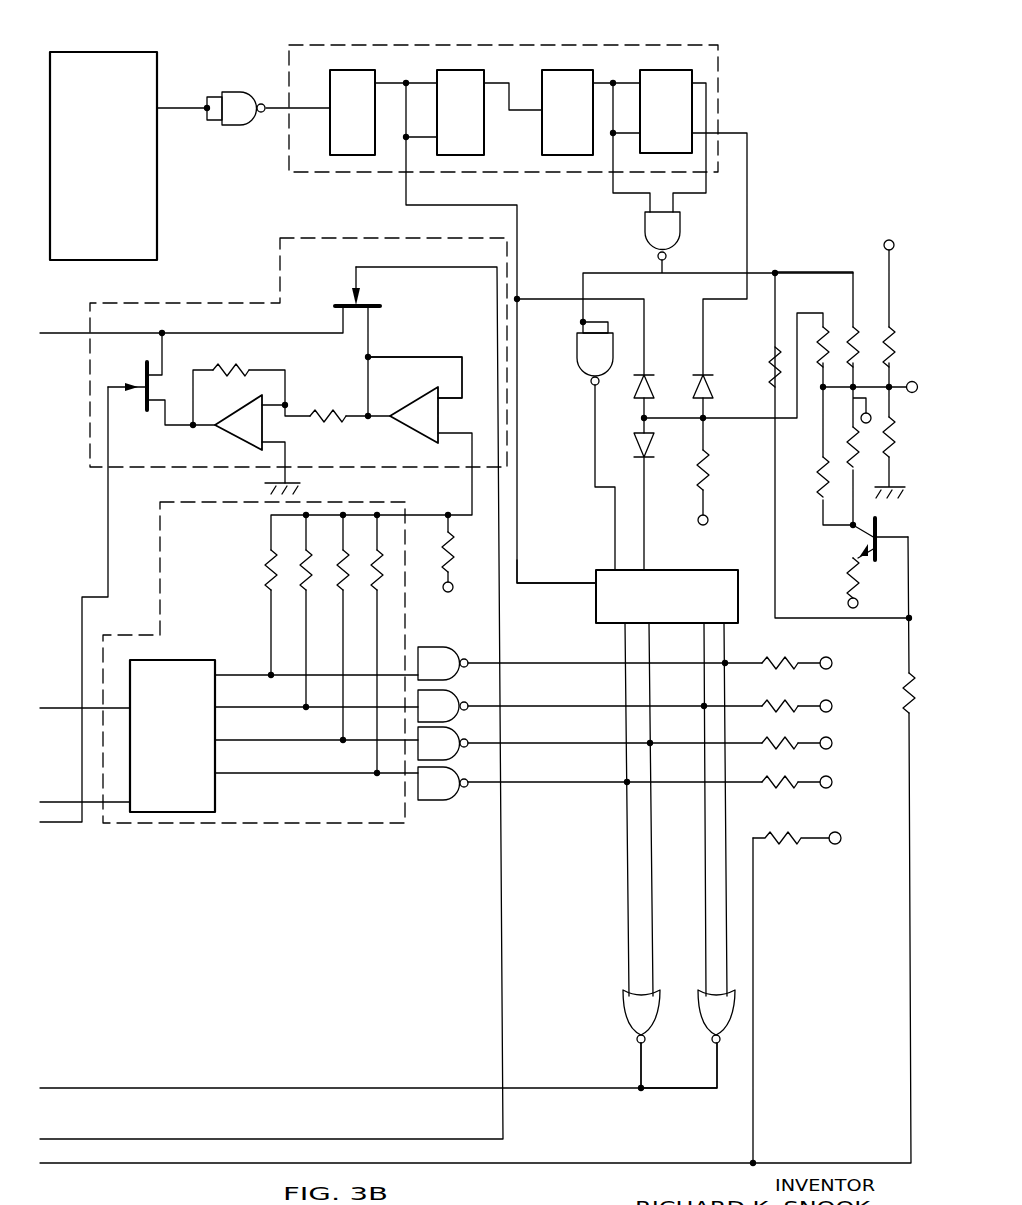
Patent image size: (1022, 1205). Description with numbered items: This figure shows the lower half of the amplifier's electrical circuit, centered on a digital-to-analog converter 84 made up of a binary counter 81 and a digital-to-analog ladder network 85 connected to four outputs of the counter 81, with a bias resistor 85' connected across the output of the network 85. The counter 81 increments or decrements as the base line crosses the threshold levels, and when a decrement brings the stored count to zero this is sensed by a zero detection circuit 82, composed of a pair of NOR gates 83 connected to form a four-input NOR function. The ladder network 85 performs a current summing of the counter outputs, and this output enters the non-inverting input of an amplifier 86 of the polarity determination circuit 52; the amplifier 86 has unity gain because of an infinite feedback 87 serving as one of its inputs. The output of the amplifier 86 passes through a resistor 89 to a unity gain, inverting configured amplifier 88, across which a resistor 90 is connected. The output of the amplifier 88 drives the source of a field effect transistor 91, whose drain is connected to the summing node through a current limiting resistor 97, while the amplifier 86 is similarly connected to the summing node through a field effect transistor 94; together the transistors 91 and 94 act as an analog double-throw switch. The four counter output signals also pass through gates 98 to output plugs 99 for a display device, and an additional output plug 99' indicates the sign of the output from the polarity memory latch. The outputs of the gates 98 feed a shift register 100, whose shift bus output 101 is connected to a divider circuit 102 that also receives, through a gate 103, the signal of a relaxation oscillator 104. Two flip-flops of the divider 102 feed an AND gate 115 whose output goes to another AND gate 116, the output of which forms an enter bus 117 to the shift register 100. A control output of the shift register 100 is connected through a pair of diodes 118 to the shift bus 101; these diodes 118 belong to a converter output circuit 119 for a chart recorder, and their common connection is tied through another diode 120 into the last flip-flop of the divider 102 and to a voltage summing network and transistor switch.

The relaxation oscillator 104 is at (170, 68).
The gate 103 is at (267, 72).
The divider circuit 102 is at (752, 66).
The AND gate 115 is at (683, 230).
The converter output circuit 119 is at (806, 262).
The polarity determination circuit 52 is at (265, 264).
The field effect transistor 94 is at (365, 303).
The field effect transistor 91 is at (147, 375).
The resistor 90 is at (248, 366).
The resistor 89 is at (325, 412).
The amplifier 88 is at (235, 437).
The amplifier 86 is at (418, 398).
The infinite feedback 87 is at (436, 355).
The AND gate 116 is at (580, 363).
The diodes 118 is at (653, 390).
The diode 120 is at (713, 392).
The enter bus 117 is at (596, 460).
The shift bus output 101 is at (542, 580).
The shift register 100 is at (708, 568).
The digital-to-analog converter 84 is at (147, 520).
The digital-to-analog ladder network 85 is at (305, 591).
The bias resistor 85' is at (466, 553).
The gates 98 is at (448, 648).
The current limiting resistor 97 is at (785, 665).
The output plugs 99 is at (852, 662).
The additional output plug 99' is at (858, 831).
The binary counter 81 is at (218, 795).
The NOR gates 83 is at (630, 1027).
The zero detection circuit 82 is at (680, 1035).